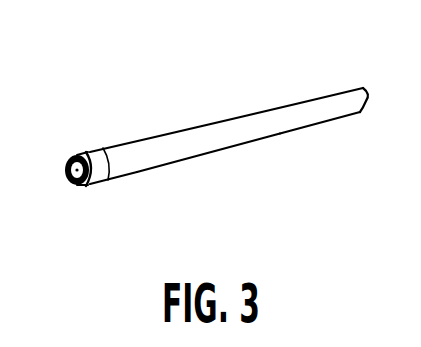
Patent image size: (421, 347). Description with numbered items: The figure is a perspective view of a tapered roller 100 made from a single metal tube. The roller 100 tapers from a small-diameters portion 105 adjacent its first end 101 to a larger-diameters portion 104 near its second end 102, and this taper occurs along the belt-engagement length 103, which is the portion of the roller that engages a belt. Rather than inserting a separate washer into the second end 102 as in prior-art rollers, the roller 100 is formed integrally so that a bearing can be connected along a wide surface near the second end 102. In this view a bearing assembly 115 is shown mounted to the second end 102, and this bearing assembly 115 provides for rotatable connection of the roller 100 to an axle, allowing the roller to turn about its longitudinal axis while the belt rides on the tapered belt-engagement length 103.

The tapered roller 100 is at (208, 133).
The first end 101 is at (362, 85).
The second end 102 is at (90, 150).
The belt-engagement length 103 is at (227, 148).
The larger-diameters portion 104 is at (137, 160).
The small-diameters portion 105 is at (330, 107).
The bearing assembly 115 is at (75, 185).